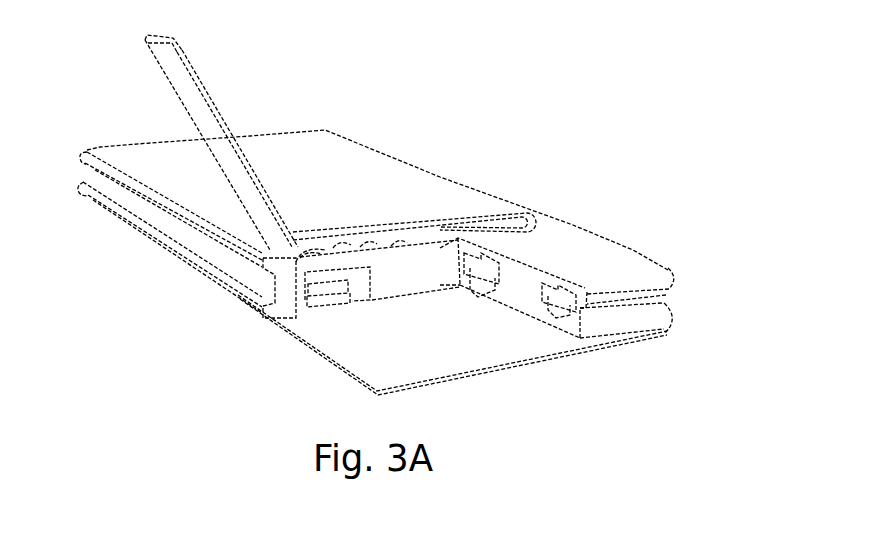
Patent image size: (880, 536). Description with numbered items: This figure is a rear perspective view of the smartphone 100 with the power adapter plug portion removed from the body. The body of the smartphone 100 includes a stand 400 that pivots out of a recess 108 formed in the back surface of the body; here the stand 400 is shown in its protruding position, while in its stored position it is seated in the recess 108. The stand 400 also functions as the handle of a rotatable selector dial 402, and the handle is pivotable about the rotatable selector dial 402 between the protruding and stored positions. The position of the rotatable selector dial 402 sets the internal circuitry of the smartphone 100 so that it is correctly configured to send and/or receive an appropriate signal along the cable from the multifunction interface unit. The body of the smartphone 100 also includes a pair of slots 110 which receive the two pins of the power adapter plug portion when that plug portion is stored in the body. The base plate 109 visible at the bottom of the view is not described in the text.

The smartphone 100 is at (490, 147).
The recess 108 is at (483, 228).
The base plate 109 is at (443, 333).
The slots 110 is at (483, 272).
The stand 400 is at (188, 85).
The rotatable selector dial 402 is at (310, 255).